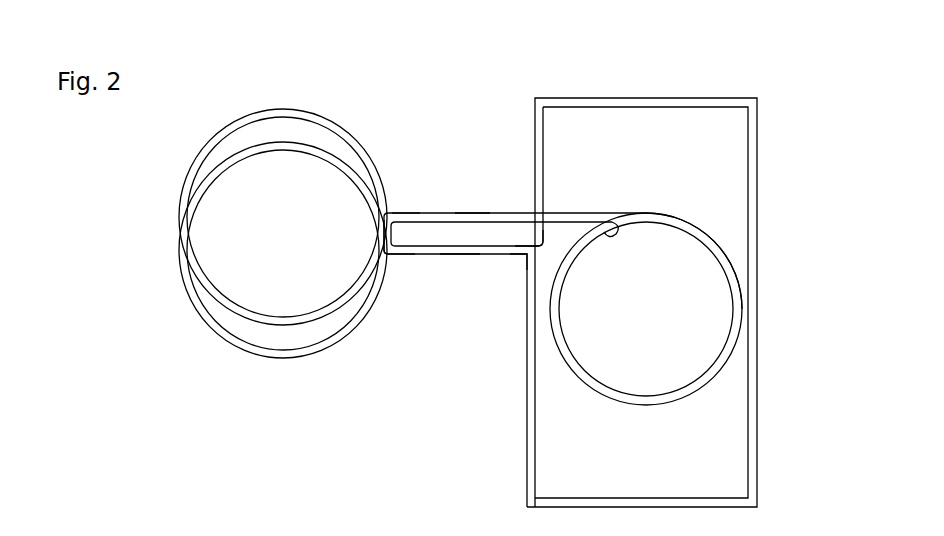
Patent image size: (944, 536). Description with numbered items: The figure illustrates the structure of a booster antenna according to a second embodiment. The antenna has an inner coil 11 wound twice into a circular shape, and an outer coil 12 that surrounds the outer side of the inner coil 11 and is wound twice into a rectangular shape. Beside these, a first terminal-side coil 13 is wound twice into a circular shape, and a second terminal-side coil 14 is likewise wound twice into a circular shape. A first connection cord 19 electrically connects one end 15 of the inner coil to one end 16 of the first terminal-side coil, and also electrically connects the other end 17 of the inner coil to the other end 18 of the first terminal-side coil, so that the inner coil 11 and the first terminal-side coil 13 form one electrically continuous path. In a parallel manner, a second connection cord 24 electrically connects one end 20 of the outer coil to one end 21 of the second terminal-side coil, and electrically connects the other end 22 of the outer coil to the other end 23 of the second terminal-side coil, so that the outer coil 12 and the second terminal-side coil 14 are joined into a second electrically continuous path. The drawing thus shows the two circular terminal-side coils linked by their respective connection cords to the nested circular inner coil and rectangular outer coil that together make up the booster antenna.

The inner coil 11 is at (719, 246).
The outer coil 12 is at (731, 97).
The first terminal-side coil 13 is at (303, 110).
The second terminal-side coil 14 is at (334, 155).
The one end of the inner coil 15 is at (617, 225).
The one end of the first terminal-side coil 16 is at (405, 221).
The other end of the inner coil 17 is at (600, 213).
The other end of the first terminal-side coil 18 is at (392, 210).
The first connection cord 19 is at (472, 213).
The one end of the outer coil 20 is at (523, 256).
The one end of the second terminal-side coil 21 is at (393, 258).
The other end of the outer coil 22 is at (525, 245).
The other end of the second terminal-side coil 23 is at (400, 256).
The second connection cord 24 is at (458, 255).